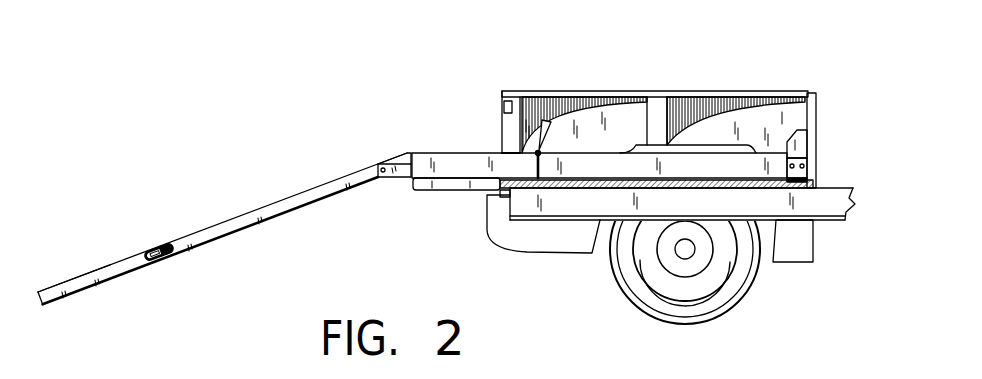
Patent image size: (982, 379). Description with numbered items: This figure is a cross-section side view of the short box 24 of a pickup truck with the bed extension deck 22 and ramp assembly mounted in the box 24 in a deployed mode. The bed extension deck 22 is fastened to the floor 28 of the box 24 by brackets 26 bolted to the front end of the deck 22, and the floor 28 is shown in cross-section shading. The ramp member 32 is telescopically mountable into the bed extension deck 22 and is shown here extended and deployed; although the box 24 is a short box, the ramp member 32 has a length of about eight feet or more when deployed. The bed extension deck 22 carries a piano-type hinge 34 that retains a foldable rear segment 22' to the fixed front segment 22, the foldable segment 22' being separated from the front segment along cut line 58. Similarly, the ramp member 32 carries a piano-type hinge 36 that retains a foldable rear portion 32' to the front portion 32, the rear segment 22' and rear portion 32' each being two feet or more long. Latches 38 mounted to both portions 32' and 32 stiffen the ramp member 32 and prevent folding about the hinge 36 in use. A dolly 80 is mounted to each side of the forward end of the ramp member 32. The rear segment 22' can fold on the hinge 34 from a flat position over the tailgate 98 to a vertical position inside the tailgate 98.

The bed extension deck 22 is at (659, 105).
The foldable rear segment 22' is at (454, 95).
The box 24 is at (737, 91).
The brackets 26 is at (798, 150).
The floor 28 is at (810, 188).
The ramp member 32 is at (222, 212).
The foldable rear portion 32' is at (74, 232).
The piano-type hinge 34 is at (540, 148).
The piano-type hinge 36 is at (157, 207).
The latches 38 is at (162, 259).
The cut line 58 is at (503, 152).
The dolly 80 is at (403, 178).
The tailgate 98 is at (440, 193).